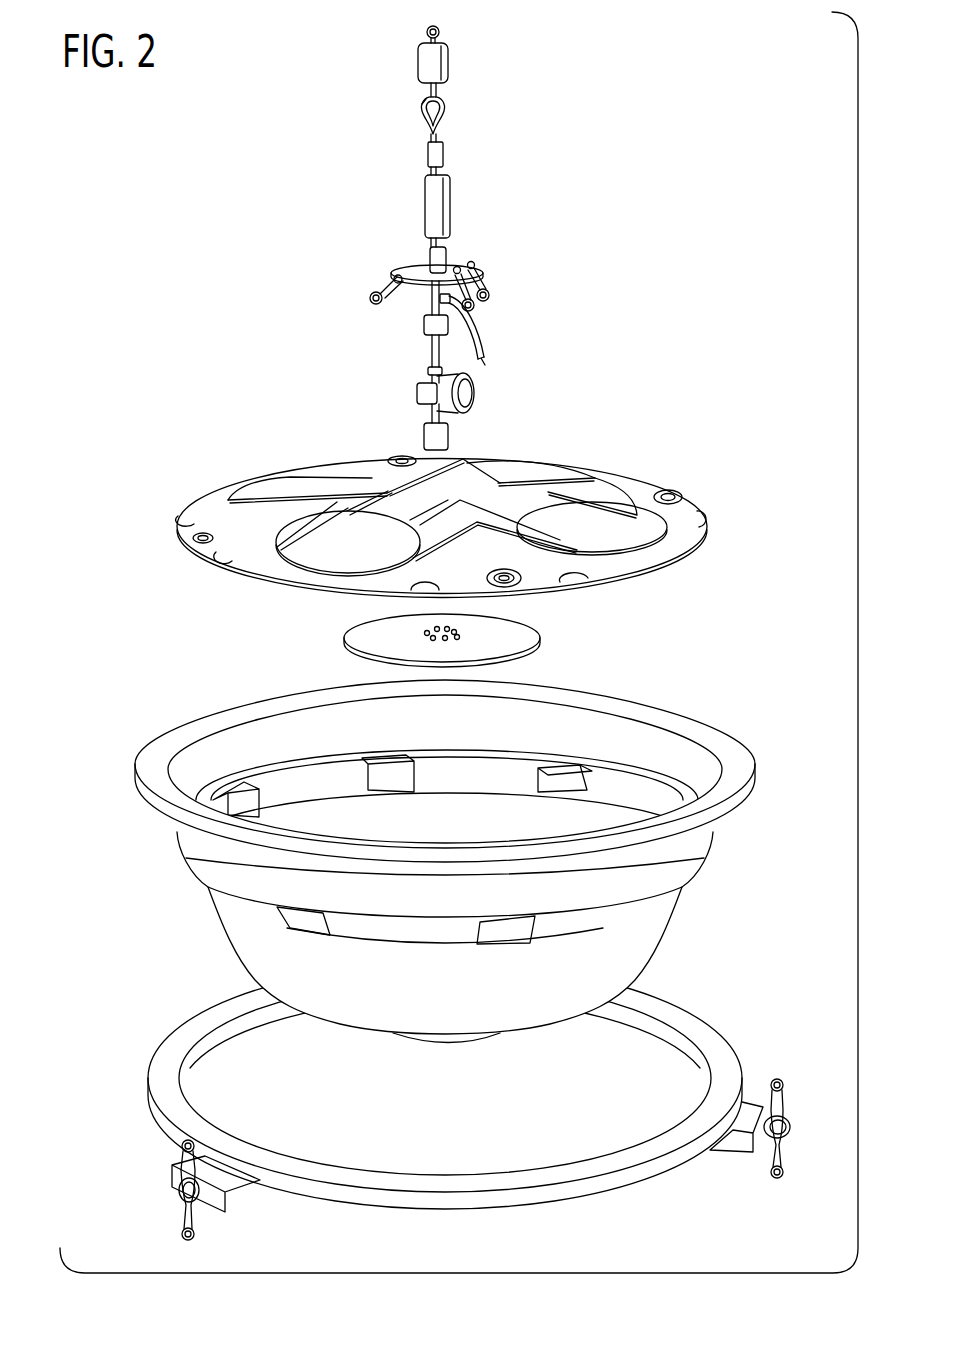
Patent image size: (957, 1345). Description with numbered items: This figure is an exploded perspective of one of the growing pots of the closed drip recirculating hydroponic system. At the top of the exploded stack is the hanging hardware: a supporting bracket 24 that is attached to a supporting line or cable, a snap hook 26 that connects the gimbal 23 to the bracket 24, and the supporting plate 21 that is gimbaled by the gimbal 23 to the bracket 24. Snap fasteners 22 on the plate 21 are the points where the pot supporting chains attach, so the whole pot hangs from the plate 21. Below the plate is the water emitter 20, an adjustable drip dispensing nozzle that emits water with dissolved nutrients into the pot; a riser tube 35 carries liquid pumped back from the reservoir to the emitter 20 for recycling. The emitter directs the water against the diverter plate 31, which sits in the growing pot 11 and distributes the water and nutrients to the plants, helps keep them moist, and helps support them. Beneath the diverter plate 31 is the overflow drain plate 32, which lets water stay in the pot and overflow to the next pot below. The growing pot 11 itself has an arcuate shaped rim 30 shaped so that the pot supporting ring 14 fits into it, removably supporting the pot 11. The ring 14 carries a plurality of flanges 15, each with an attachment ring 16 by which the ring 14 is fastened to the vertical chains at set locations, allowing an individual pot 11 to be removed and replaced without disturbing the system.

The growing pot 11 is at (690, 893).
The pot supporting ring 14 is at (713, 1013).
The flange 15 is at (737, 1142).
The attachment ring 16 is at (785, 1083).
The water emitter 20 is at (422, 389).
The supporting plate 21 is at (417, 268).
The snap fastener 22 is at (380, 283).
The gimbal 23 is at (443, 155).
The supporting bracket 24 is at (451, 200).
The snap hook 26 is at (445, 115).
The arcuate shaped rim 30 is at (687, 705).
The diverter plate 31 is at (629, 469).
The overflow drain plate 32 is at (515, 634).
The riser tube 35 is at (480, 332).